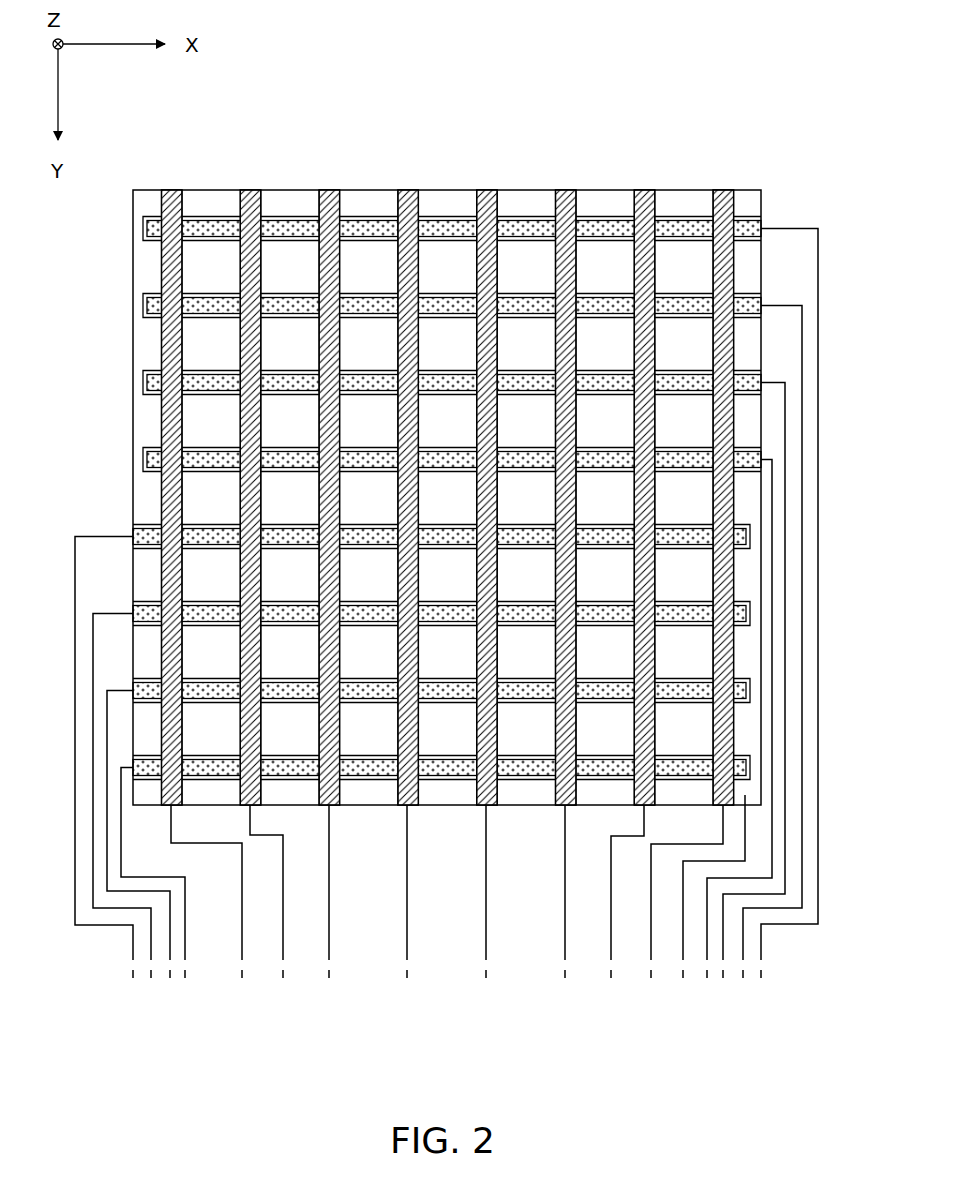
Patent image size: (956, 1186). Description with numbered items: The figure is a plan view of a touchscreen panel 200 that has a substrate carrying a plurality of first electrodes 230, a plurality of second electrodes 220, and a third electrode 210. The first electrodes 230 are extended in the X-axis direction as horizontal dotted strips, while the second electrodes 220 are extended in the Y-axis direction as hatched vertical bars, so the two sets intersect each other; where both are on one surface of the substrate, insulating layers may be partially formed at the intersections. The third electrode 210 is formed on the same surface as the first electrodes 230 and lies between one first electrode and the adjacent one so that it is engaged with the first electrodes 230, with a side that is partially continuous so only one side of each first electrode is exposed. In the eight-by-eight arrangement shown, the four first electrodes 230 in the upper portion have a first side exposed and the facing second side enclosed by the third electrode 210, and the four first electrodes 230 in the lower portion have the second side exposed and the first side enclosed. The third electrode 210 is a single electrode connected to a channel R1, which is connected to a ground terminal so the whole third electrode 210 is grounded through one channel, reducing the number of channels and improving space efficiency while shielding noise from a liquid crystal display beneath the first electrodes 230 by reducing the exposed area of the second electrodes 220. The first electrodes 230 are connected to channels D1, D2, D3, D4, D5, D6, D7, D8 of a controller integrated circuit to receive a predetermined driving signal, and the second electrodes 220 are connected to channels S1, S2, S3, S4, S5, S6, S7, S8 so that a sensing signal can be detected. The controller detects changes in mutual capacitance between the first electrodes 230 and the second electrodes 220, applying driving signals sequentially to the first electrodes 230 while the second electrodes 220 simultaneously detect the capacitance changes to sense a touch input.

The touchscreen panel 200 is at (722, 100).
The third electrode 210 is at (143, 204).
The second electrodes 220 is at (172, 196).
The first electrodes 230 is at (153, 229).
The channel S1 is at (242, 957).
The channel S2 is at (283, 957).
The channel S3 is at (329, 955).
The channel S4 is at (407, 955).
The channel S5 is at (486, 950).
The channel S6 is at (565, 950).
The channel S7 is at (611, 955).
The channel S8 is at (651, 955).
The channel D1 is at (761, 955).
The channel D2 is at (743, 955).
The channel D3 is at (723, 955).
The channel D4 is at (707, 955).
The channel D5 is at (133, 960).
The channel D6 is at (151, 960).
The channel D7 is at (170, 960).
The channel D8 is at (185, 960).
The channel R1 is at (683, 955).